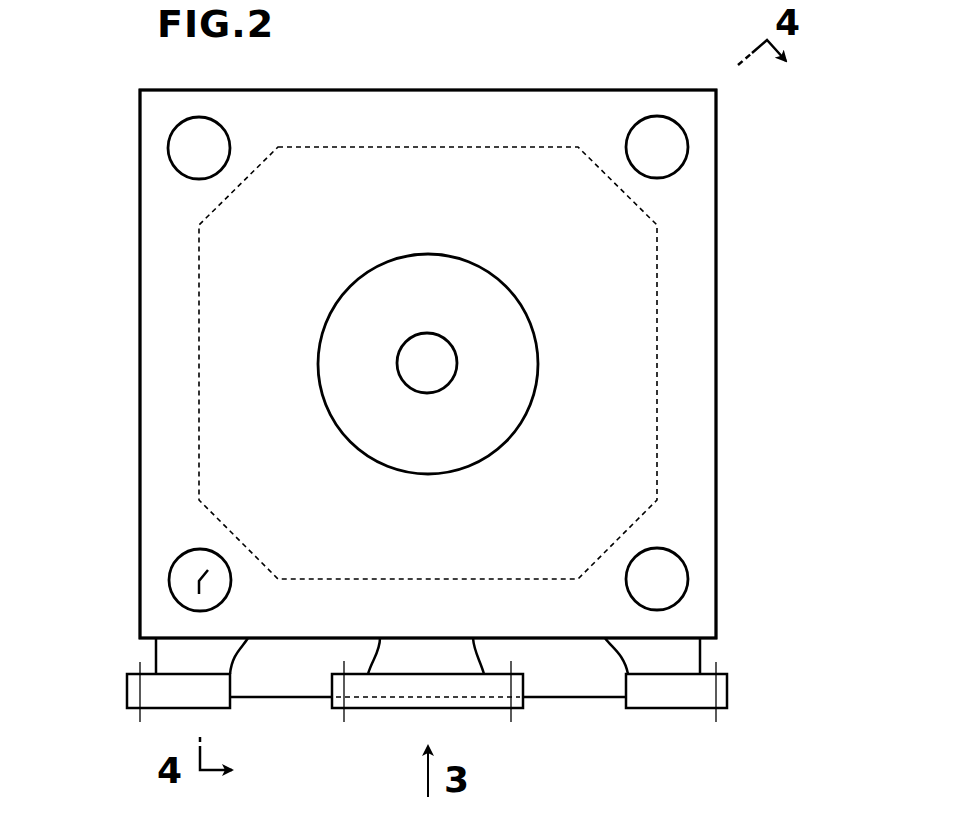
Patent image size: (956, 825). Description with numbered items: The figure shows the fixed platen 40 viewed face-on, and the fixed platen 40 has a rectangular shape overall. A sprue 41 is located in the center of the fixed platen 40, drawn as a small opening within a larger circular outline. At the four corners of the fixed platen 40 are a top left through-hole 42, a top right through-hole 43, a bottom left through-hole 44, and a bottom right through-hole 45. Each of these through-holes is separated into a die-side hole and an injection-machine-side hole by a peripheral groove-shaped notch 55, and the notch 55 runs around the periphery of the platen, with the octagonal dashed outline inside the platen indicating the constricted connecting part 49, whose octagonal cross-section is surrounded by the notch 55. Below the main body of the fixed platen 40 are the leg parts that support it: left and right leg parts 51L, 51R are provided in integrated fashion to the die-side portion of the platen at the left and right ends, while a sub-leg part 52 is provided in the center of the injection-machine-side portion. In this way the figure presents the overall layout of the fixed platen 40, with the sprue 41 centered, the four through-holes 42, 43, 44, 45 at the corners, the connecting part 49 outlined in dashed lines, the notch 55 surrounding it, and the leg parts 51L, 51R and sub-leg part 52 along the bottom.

The fixed platen 40 is at (564, 78).
The sprue 41 is at (450, 372).
The top left through-hole 42 is at (170, 156).
The top right through-hole 43 is at (682, 152).
The bottom left through-hole 44 is at (172, 584).
The bottom right through-hole 45 is at (684, 582).
The connecting part 49 is at (199, 428).
The left leg part 51L is at (136, 693).
The right leg part 51R is at (728, 689).
The sub-leg part 52 is at (390, 708).
The notch 55 is at (428, 120).